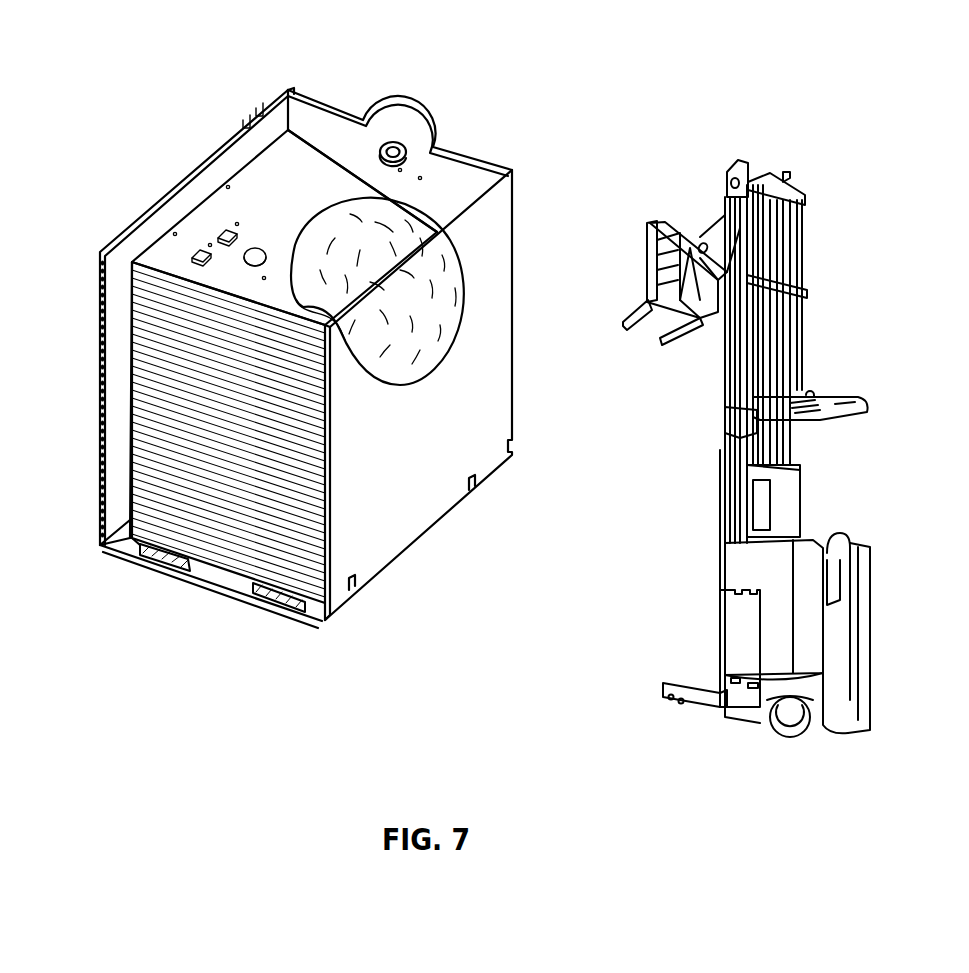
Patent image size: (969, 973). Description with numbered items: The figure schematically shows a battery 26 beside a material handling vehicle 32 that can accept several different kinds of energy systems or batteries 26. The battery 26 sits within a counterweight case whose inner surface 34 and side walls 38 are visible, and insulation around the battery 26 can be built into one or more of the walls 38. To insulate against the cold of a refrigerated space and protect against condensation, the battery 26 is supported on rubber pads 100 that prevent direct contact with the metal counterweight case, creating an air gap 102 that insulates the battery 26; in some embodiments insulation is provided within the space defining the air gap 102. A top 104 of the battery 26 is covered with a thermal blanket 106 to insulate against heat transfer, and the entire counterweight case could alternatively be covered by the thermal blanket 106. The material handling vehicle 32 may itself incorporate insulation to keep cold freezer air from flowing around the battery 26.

The battery 26 is at (427, 503).
The material handling vehicle 32 is at (798, 346).
The inner surface 34 is at (133, 250).
The side walls 38 is at (278, 120).
The rubber pads 100 is at (163, 558).
The air gap 102 is at (307, 610).
The top 104 is at (430, 205).
The thermal blanket 106 is at (450, 290).